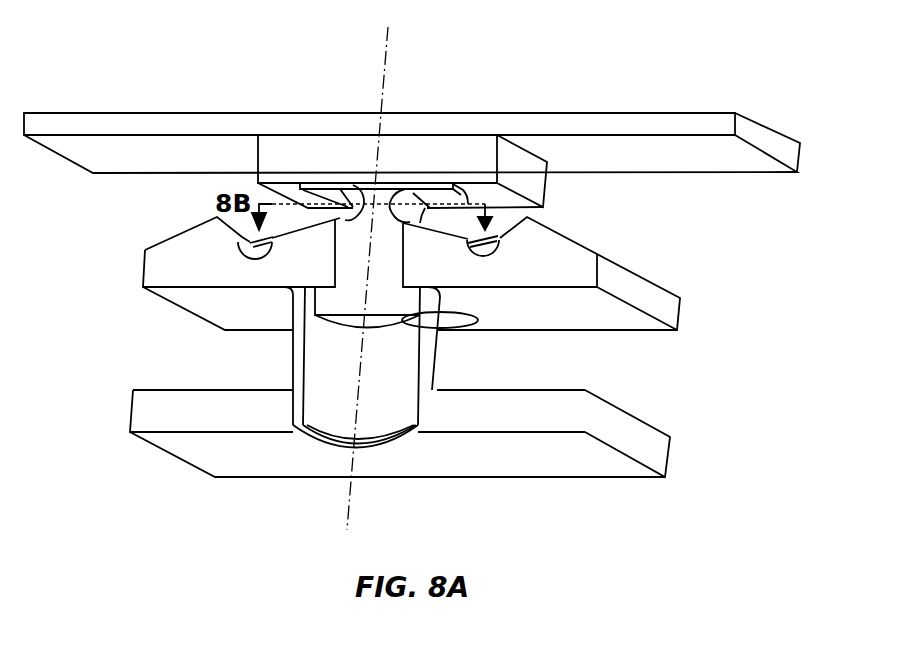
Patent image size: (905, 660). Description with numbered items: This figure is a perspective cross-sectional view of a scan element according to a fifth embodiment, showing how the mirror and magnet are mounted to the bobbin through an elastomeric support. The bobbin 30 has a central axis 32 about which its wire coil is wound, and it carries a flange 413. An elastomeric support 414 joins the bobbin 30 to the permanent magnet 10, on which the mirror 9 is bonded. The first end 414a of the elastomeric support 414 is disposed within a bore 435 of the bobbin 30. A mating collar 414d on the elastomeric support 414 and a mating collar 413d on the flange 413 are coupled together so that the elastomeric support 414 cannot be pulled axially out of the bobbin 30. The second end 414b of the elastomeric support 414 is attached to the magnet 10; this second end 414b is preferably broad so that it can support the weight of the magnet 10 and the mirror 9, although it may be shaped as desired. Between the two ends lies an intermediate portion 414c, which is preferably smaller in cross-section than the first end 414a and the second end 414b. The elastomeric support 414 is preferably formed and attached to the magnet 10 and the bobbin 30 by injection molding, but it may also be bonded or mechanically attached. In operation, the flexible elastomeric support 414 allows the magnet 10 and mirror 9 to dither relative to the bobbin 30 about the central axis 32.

The mirror 9 is at (548, 120).
The magnet 10 is at (371, 299).
The bobbin 30 is at (440, 348).
The central axis 32 is at (382, 73).
The flange 413 is at (411, 287).
The mating collar 413d is at (418, 288).
The elastomeric support 414 is at (393, 293).
The first end 414a is at (354, 404).
The second end 414b is at (393, 197).
The intermediate portion 414c is at (362, 197).
The mating collar 414d is at (314, 314).
The bore 435 is at (333, 412).